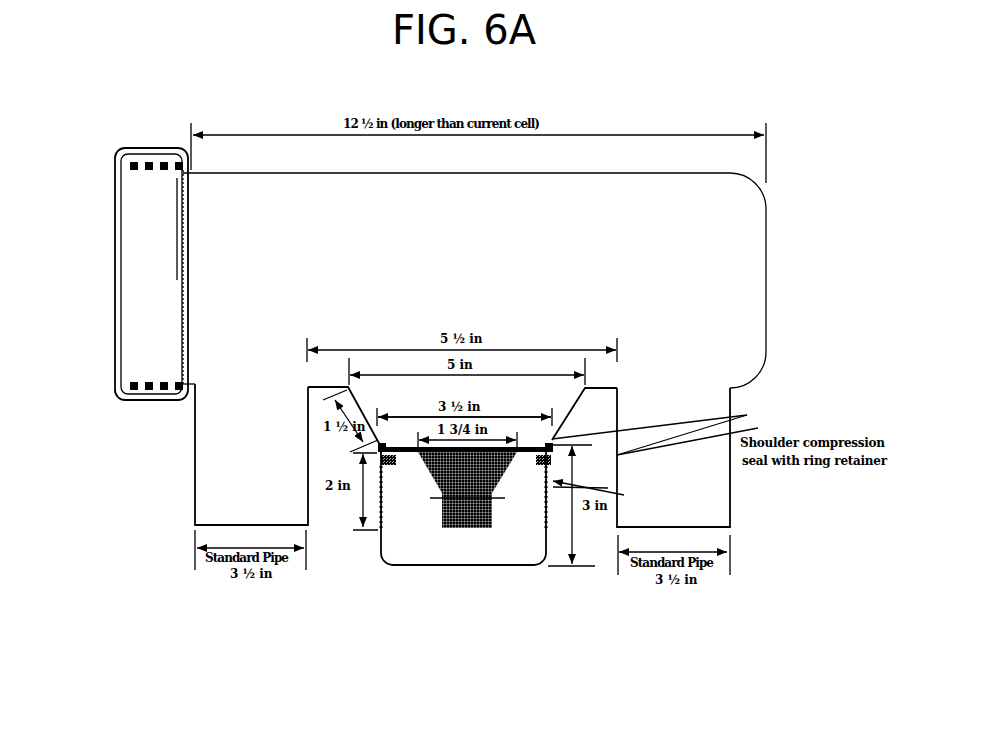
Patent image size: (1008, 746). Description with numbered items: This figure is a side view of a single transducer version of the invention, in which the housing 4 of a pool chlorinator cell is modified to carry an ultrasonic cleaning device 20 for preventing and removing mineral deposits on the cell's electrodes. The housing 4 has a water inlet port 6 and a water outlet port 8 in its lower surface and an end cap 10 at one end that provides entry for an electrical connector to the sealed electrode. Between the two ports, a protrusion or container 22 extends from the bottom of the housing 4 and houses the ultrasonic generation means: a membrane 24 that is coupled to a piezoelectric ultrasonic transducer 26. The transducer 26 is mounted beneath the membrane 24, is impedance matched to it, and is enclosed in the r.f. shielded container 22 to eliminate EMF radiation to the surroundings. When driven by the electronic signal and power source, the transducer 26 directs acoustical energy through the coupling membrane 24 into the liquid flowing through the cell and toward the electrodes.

The housing 4 is at (747, 225).
The water inlet port 6 is at (215, 462).
The water outlet port 8 is at (717, 471).
The end cap 10 is at (137, 260).
The ultrasonic cleaning device 20 is at (352, 598).
The container 22 is at (494, 567).
The membrane 24 is at (398, 456).
The ultrasonic transducer 26 is at (503, 470).